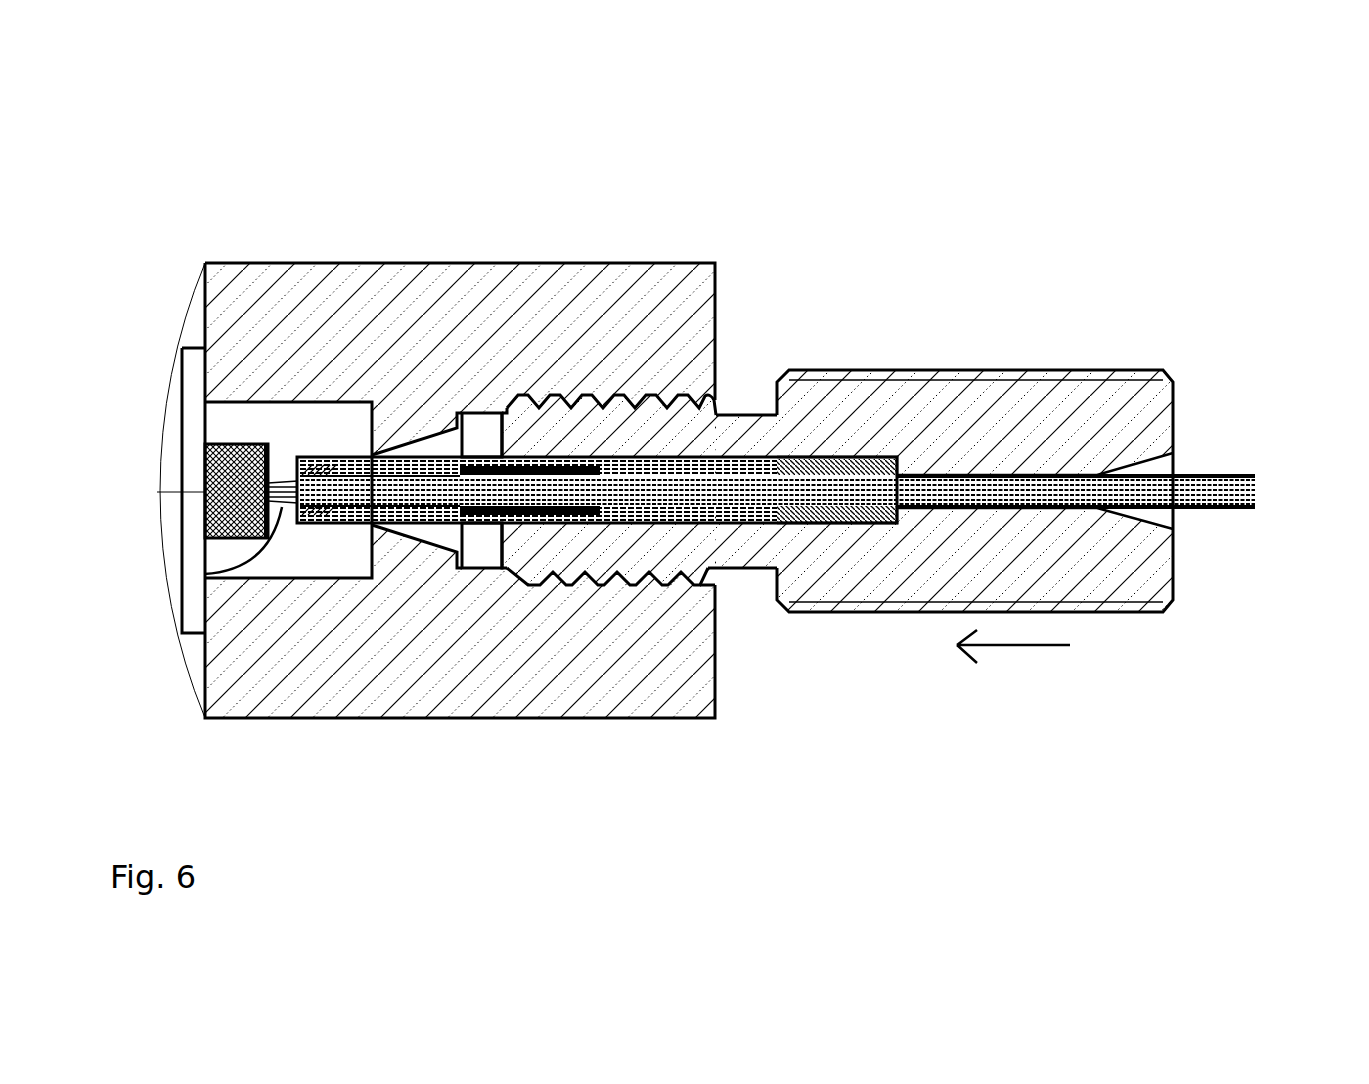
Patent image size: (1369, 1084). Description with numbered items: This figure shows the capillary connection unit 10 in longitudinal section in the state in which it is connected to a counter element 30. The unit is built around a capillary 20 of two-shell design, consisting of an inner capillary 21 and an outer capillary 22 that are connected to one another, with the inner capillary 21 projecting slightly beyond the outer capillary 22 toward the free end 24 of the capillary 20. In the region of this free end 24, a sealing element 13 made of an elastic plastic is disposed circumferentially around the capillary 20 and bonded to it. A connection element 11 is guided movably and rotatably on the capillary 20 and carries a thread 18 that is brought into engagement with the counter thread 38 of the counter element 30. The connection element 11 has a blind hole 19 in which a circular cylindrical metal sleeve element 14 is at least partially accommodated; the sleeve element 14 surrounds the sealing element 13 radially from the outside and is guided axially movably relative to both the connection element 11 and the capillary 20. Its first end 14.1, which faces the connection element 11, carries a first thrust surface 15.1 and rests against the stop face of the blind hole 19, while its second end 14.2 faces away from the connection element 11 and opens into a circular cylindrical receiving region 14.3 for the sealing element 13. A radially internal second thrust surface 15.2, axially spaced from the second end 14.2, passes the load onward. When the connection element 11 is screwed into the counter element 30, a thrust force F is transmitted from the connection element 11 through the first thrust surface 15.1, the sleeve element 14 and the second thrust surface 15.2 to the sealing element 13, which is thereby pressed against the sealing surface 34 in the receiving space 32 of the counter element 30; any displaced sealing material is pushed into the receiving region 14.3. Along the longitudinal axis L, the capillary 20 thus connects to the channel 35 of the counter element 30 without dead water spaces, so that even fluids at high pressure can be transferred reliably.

The capillary connection unit 10 is at (1161, 219).
The connection element 11 is at (980, 370).
The sealing element 13 is at (590, 483).
The sleeve element 14 is at (890, 458).
The first end 14.1 is at (862, 525).
The second end 14.2 is at (297, 505).
The receiving region 14.3 is at (458, 530).
The first thrust surface 15.1 is at (897, 467).
The second thrust surface 15.2 is at (640, 528).
The thread 18 is at (730, 410).
The blind hole 19 is at (778, 527).
The capillary 20 is at (1212, 470).
The inner capillary 21 is at (1255, 489).
The outer capillary 22 is at (1257, 480).
The free end 24 is at (330, 525).
The counter element 30 is at (395, 263).
The receiving space 32 is at (370, 527).
The sealing surface 34 is at (204, 574).
The channel 35 is at (292, 485).
The counter thread 38 is at (585, 395).
The longitudinal axis L is at (157, 492).
The thrust force F is at (1022, 645).